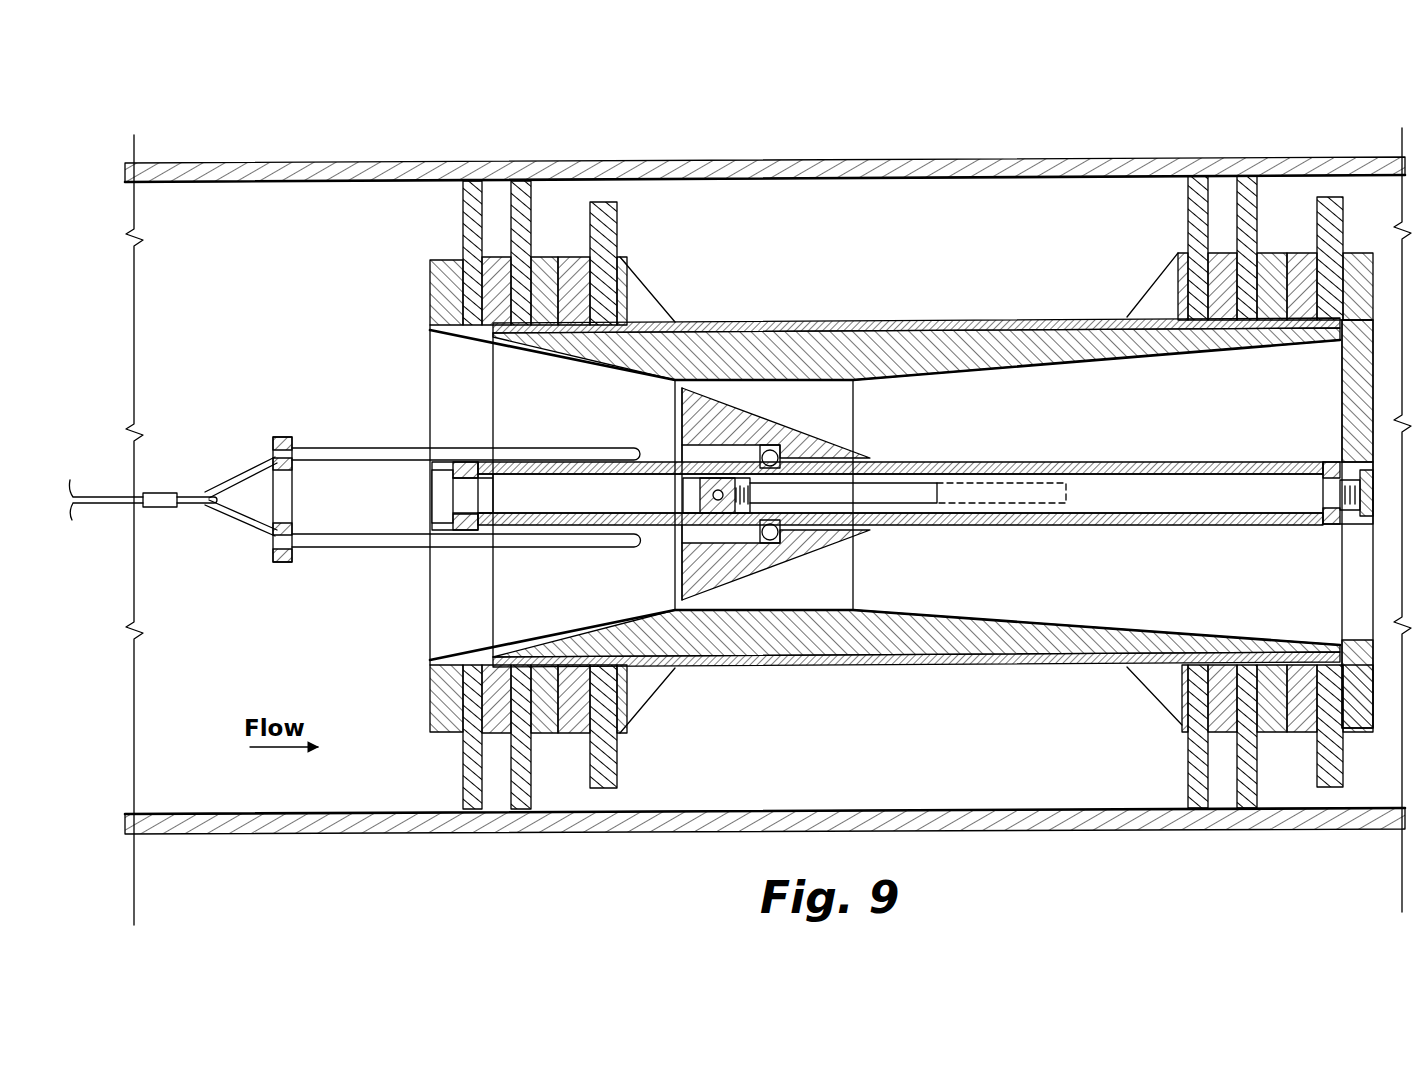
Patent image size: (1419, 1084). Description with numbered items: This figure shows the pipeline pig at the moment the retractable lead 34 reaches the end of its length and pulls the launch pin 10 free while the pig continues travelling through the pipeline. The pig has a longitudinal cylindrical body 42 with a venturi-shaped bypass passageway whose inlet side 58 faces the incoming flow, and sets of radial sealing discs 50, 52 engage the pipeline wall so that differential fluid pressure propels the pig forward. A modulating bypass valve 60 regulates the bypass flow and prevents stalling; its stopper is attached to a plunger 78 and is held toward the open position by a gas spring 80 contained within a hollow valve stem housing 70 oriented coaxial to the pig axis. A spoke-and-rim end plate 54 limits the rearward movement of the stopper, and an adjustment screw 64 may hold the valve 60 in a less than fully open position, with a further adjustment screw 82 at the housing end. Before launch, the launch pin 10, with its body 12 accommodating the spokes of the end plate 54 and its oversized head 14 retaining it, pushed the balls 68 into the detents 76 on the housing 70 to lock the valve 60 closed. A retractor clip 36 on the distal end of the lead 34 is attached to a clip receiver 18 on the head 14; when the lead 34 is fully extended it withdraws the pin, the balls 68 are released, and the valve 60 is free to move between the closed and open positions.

The launch pin 10 is at (358, 444).
The body/pin portion 12 is at (422, 488).
The top end/head 14 is at (273, 550).
The clip attachment 18 is at (235, 477).
The lead 34 is at (98, 497).
The clip 36 is at (193, 507).
The body 42 is at (993, 322).
The radial sealing discs 50 is at (1225, 188).
The radial sealing discs 52 is at (548, 205).
The end plate 54 is at (433, 700).
The inlet side 58 is at (455, 665).
The modulating bypass valve 60 is at (776, 429).
The adjustment screw 64 is at (440, 495).
The balls 68 is at (770, 533).
The housing 70 is at (1170, 525).
The detents 76 is at (777, 517).
The plunger 78 is at (1025, 488).
The gas spring 80 is at (1168, 490).
The adjustment screw 82 is at (1336, 468).